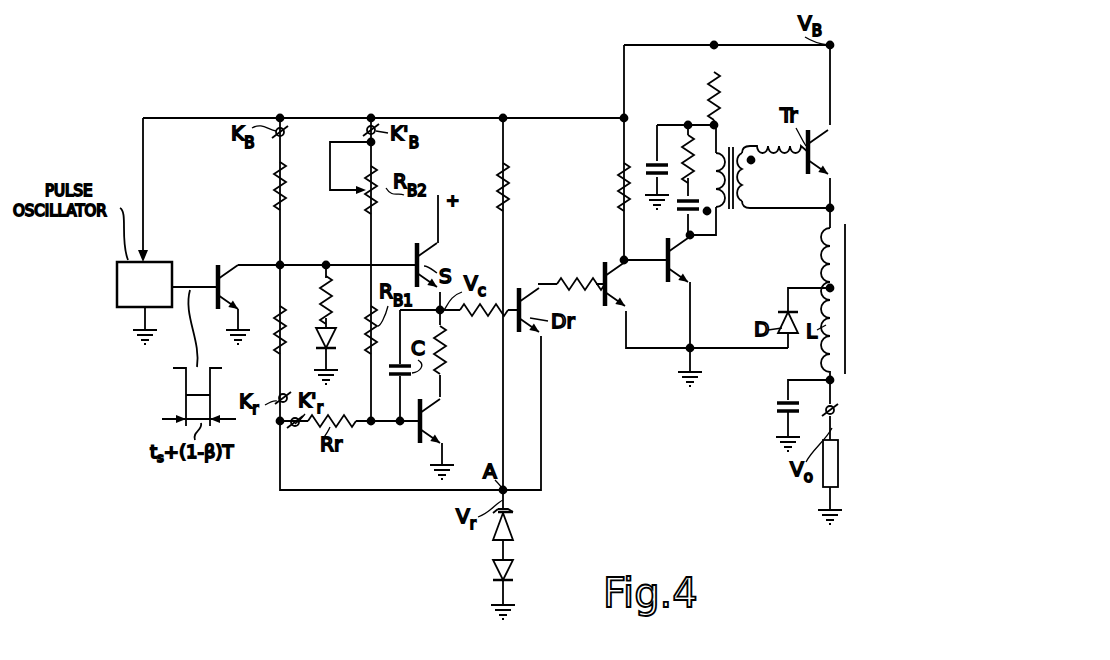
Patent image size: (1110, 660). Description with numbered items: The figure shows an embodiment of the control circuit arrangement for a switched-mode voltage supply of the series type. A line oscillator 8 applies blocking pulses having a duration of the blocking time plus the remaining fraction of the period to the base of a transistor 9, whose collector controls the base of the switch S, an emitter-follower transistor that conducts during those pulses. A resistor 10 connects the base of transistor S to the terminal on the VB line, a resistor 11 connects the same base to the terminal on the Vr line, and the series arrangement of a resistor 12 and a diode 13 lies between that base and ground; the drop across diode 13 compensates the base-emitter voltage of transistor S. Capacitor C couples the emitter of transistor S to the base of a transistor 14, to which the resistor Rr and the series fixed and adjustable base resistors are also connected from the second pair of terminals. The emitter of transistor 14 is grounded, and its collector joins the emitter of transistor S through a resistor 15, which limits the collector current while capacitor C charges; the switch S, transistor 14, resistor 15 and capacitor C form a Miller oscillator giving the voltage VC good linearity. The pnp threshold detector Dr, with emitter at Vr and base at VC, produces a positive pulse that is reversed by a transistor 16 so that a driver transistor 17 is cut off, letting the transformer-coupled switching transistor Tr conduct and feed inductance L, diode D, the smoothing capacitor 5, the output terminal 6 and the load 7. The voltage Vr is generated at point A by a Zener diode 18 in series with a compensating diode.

The smoothing capacitor 5 is at (776, 408).
The output terminal 6 is at (826, 407).
The load 7 is at (828, 463).
The line oscillator 8 is at (160, 262).
The transistor 9 is at (222, 289).
The resistor 10 is at (276, 191).
The resistor 11 is at (276, 338).
The resistor 12 is at (322, 298).
The diode 13 is at (320, 332).
The transistor 14 is at (430, 422).
The resistor 15 is at (448, 360).
The transistor 16 is at (612, 291).
The driver transistor 17 is at (680, 268).
The Zener diode 18 is at (513, 530).